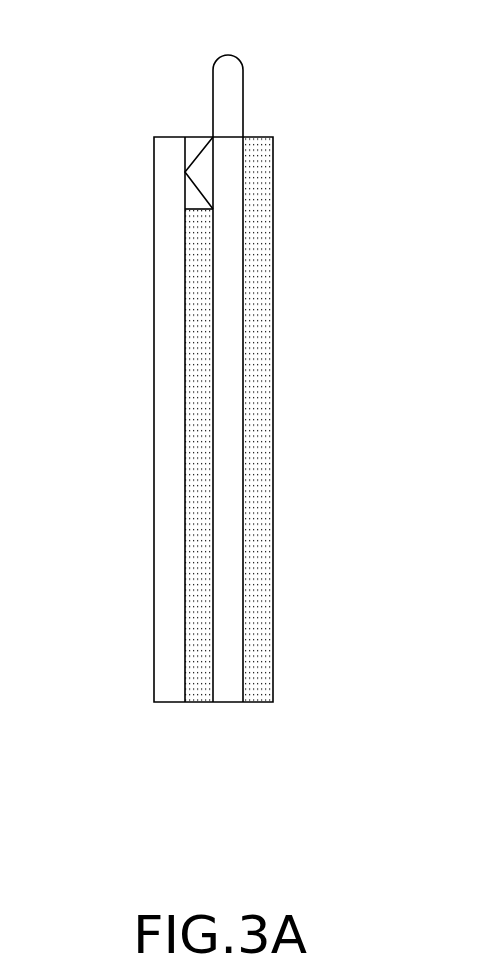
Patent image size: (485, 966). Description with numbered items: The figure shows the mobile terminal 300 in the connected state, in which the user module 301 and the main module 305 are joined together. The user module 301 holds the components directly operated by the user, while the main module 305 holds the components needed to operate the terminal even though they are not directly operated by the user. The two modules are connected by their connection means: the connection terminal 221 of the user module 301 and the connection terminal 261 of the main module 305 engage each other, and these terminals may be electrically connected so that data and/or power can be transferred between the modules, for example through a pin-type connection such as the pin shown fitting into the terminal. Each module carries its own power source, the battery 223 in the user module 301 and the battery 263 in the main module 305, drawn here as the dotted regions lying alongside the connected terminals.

The mobile terminal 300 is at (151, 72).
The connection terminal 221 is at (192, 152).
The battery 223 is at (200, 502).
The connection terminal 261 is at (203, 180).
The battery 263 is at (258, 438).
The user module 301 is at (154, 708).
The main module 305 is at (273, 708).